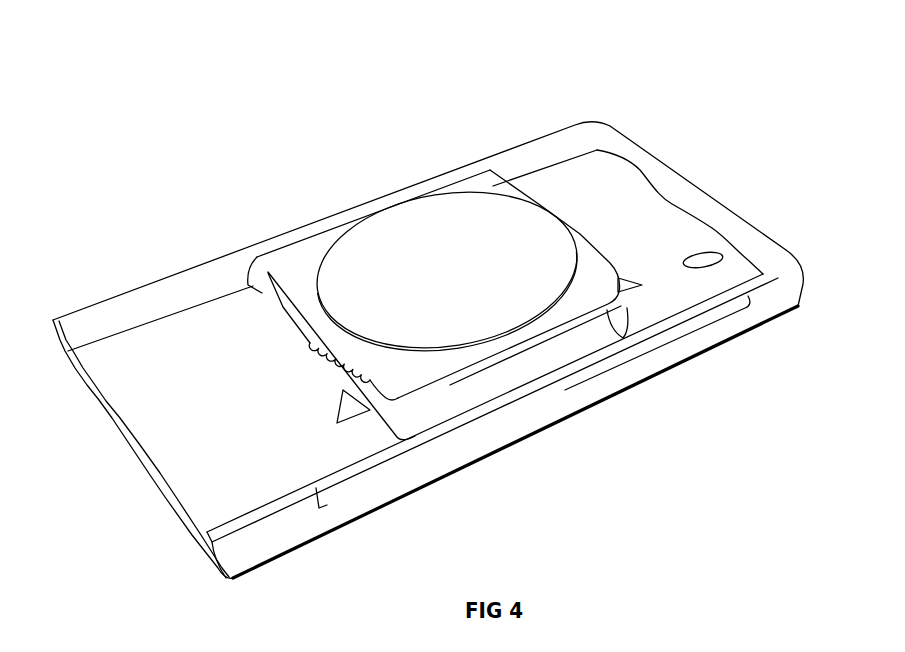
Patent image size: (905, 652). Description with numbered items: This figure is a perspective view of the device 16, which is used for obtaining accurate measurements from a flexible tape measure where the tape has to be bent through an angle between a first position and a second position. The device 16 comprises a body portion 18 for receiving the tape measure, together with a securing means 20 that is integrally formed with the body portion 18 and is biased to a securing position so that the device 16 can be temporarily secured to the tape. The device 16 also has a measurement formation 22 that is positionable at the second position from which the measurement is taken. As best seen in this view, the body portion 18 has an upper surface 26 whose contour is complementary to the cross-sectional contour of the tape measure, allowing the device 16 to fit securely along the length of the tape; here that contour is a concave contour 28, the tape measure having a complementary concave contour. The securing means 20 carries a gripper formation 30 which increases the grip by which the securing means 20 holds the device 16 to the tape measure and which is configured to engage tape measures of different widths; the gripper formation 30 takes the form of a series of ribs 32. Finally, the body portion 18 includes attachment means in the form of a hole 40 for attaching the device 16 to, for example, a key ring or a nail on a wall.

The device 16 is at (700, 53).
The body portion 18 is at (208, 493).
The securing means 20 is at (598, 242).
The measurement formation 22 is at (93, 386).
The upper surface 26 is at (250, 406).
The concave contour 28 is at (152, 438).
The gripper formation 30 is at (297, 344).
The ribs 32 is at (340, 357).
The hole 40 is at (717, 256).